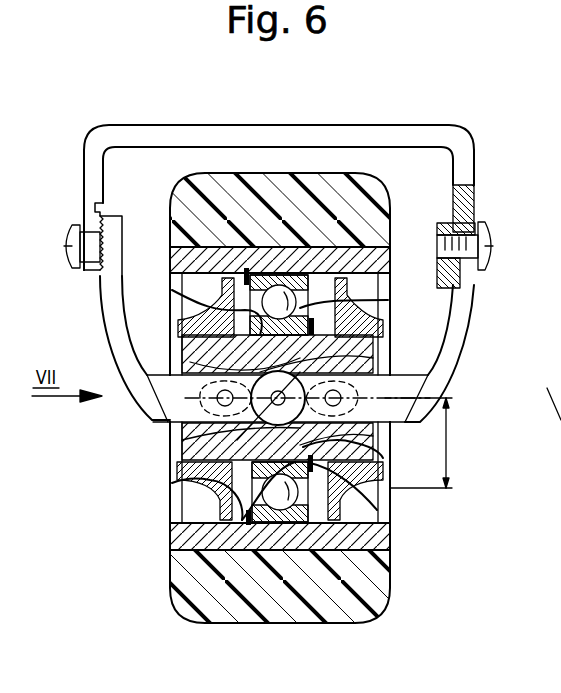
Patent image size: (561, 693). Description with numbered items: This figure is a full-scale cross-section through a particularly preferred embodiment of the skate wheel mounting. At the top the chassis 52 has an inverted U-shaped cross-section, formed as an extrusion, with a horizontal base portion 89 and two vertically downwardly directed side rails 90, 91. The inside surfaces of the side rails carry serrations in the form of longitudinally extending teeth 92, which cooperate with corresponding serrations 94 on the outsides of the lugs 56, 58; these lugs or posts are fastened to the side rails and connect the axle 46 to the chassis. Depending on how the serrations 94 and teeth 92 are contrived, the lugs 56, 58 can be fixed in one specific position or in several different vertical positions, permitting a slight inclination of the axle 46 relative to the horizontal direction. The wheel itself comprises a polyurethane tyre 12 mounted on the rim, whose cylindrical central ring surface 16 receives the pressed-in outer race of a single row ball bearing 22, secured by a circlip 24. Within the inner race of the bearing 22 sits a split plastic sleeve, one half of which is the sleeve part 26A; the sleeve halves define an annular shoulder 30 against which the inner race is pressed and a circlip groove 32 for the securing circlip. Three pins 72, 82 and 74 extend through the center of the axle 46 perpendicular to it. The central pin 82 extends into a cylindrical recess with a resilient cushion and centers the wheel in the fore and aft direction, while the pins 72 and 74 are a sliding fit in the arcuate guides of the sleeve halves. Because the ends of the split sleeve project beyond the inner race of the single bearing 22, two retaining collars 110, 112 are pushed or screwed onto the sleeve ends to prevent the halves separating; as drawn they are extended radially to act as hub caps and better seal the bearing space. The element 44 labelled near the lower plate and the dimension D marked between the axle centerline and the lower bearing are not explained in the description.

The tyre 12 is at (372, 595).
The central ring surface 16 is at (291, 258).
The ball bearing 22 is at (310, 299).
The circlip 24 is at (245, 248).
The sleeve part 26A is at (365, 442).
The annular shoulder 30 is at (210, 306).
The circlip groove 32 is at (368, 489).
The bottom plate 44 is at (215, 528).
The axle 46 is at (165, 418).
The chassis 52 is at (382, 125).
The lug 56 is at (108, 311).
The lug 58 is at (458, 331).
The pin 72 is at (215, 363).
The pin 74 is at (345, 398).
The central pin 82 is at (310, 373).
The horizontal base portion 89 is at (207, 125).
The side rail 90 is at (86, 168).
The side rail 91 is at (478, 168).
The teeth 92 is at (108, 218).
The serrations 94 is at (456, 286).
The retaining collar 110 is at (172, 483).
The retaining collar 112 is at (390, 532).
The distance D is at (452, 447).